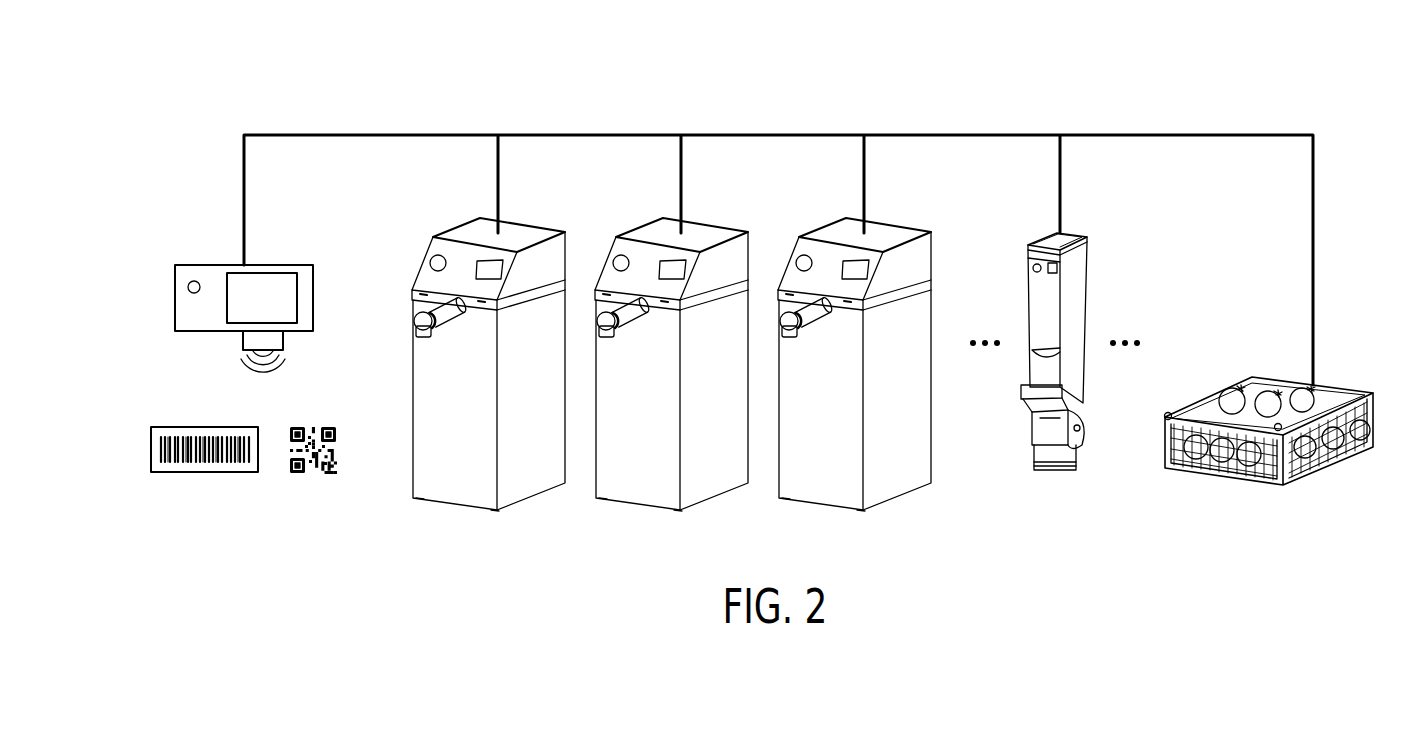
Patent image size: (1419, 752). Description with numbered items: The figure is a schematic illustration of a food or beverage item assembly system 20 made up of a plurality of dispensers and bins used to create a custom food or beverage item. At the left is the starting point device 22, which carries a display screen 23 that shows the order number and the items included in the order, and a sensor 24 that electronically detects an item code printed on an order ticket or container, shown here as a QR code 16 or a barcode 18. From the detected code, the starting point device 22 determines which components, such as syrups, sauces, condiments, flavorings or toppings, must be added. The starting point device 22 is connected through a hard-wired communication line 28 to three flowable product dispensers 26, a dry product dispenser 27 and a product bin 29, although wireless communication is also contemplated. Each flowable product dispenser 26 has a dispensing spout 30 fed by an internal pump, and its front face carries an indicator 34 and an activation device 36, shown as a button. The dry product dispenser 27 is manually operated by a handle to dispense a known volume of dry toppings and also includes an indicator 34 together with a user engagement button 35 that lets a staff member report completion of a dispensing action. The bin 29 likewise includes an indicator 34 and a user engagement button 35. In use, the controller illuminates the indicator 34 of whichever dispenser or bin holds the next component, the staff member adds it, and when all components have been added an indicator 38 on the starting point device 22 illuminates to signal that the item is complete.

The food or beverage item assembly system 20 is at (897, 93).
The communication line 28 is at (315, 135).
The starting point device 22 is at (212, 265).
The display screen 23 is at (262, 273).
The indicator 38 is at (188, 286).
The sensor 24 is at (243, 340).
The barcode 18 is at (203, 475).
The QR code 16 is at (293, 475).
The flowable product dispenser 26 is at (460, 232).
The indicator 34 is at (430, 260).
The activation device 36 is at (500, 272).
The dispensing spout 30 is at (422, 337).
The dry product dispenser 27 is at (1066, 232).
The user engagement button 35 is at (1057, 273).
The product bin 29 is at (1225, 478).